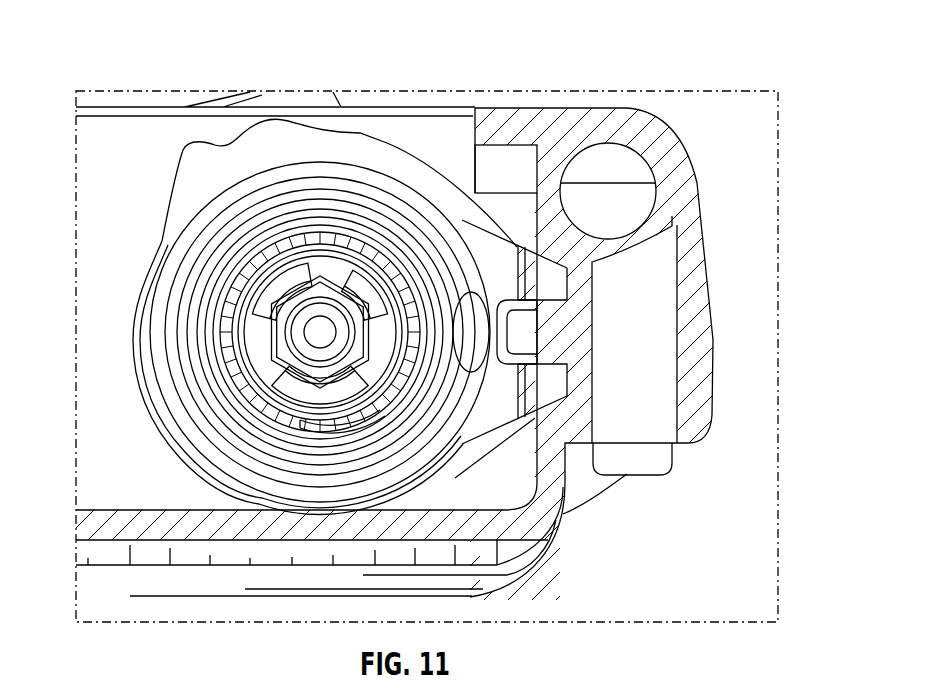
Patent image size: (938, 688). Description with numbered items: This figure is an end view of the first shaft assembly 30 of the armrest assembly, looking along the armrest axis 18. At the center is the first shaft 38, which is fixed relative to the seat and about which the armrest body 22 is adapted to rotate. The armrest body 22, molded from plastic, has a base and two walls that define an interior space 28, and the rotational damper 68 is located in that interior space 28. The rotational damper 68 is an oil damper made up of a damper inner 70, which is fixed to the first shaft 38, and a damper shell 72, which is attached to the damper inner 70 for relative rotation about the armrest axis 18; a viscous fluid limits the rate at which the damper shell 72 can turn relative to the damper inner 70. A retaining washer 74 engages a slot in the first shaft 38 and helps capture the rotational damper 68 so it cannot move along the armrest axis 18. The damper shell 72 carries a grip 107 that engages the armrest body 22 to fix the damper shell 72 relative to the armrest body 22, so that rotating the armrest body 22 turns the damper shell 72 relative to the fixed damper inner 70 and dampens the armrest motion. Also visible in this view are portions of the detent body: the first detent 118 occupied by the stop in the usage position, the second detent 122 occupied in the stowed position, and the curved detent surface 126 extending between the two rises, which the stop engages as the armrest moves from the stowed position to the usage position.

The armrest axis 18 is at (300, 336).
The armrest body 22 is at (637, 108).
The interior space 28 is at (446, 135).
The first shaft assembly 30 is at (130, 132).
The first shaft 38 is at (306, 331).
The rotational damper 68 is at (142, 287).
The damper inner 70 is at (230, 258).
The damper shell 72 is at (138, 323).
The retaining washer 74 is at (233, 316).
The grip 107 is at (565, 285).
The first detent 118 is at (532, 336).
The second detent 122 is at (230, 143).
The detent surface 126 is at (387, 140).